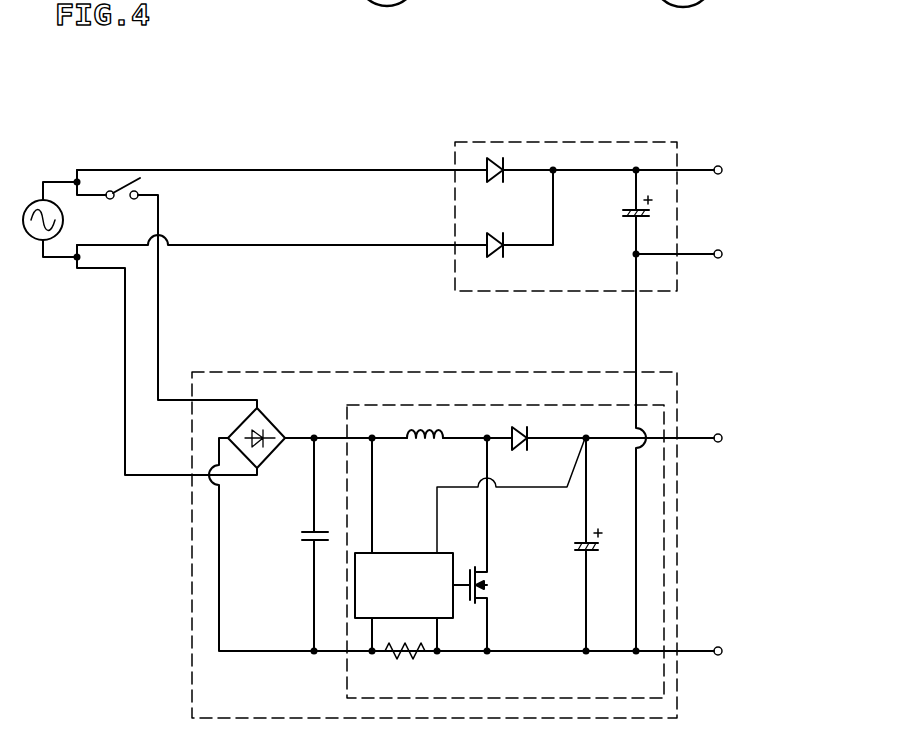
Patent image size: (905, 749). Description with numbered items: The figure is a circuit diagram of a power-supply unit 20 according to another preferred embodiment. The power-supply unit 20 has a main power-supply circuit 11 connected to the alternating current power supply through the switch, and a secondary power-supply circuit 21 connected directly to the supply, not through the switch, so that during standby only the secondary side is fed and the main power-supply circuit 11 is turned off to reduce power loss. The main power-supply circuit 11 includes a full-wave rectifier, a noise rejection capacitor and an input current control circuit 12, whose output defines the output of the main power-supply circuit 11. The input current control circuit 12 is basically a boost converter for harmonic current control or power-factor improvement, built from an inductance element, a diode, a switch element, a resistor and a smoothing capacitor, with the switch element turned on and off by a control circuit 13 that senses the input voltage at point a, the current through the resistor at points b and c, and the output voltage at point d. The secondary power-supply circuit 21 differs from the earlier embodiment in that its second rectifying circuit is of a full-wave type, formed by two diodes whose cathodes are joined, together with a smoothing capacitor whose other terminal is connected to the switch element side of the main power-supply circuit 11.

The power-supply unit 20 is at (207, 120).
The secondary power-supply circuit 21 is at (488, 134).
The main power-supply circuit 11 is at (223, 365).
The input current control circuit 12 is at (381, 398).
The control circuit 13 is at (418, 552).